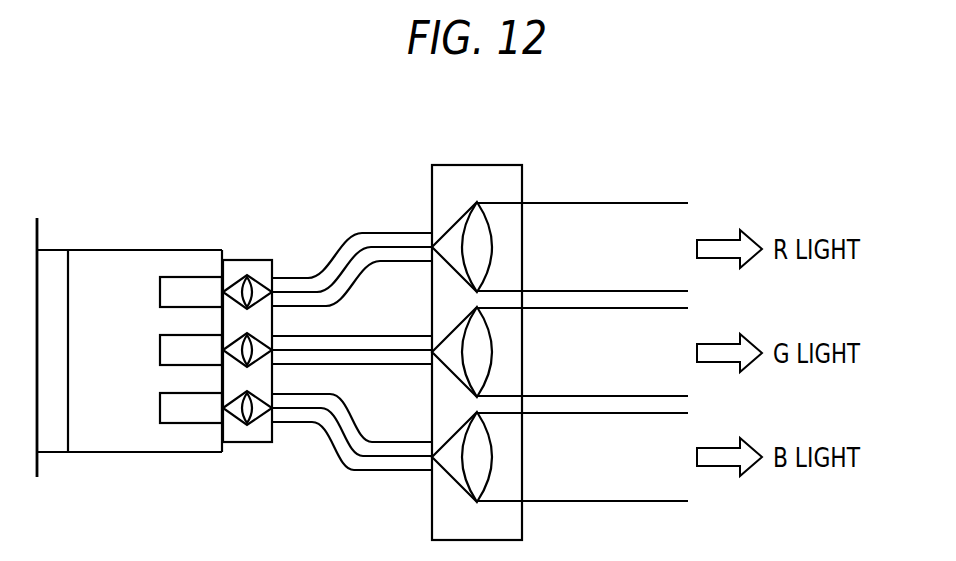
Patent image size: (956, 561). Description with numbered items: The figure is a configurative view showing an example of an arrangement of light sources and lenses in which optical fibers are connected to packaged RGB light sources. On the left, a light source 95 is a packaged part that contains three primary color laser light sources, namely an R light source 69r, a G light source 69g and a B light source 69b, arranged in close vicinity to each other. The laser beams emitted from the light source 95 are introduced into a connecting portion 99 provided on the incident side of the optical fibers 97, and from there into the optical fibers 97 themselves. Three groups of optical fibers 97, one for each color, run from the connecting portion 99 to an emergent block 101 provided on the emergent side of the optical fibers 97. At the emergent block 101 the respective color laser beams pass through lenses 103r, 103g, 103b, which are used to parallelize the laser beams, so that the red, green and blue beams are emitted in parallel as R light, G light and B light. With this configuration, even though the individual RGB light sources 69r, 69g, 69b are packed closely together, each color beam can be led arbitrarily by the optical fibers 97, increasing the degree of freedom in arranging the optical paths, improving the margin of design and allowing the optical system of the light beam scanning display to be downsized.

The light source 95 is at (205, 190).
The R light source 69r is at (160, 293).
The G light source 69g is at (160, 351).
The B light source 69b is at (160, 409).
The connecting portion 99 is at (252, 260).
The optical fibers 97 is at (347, 240).
The emergent block 101 is at (492, 165).
The lens 103r is at (493, 232).
The lens 103g is at (492, 346).
The lens 103b is at (492, 463).